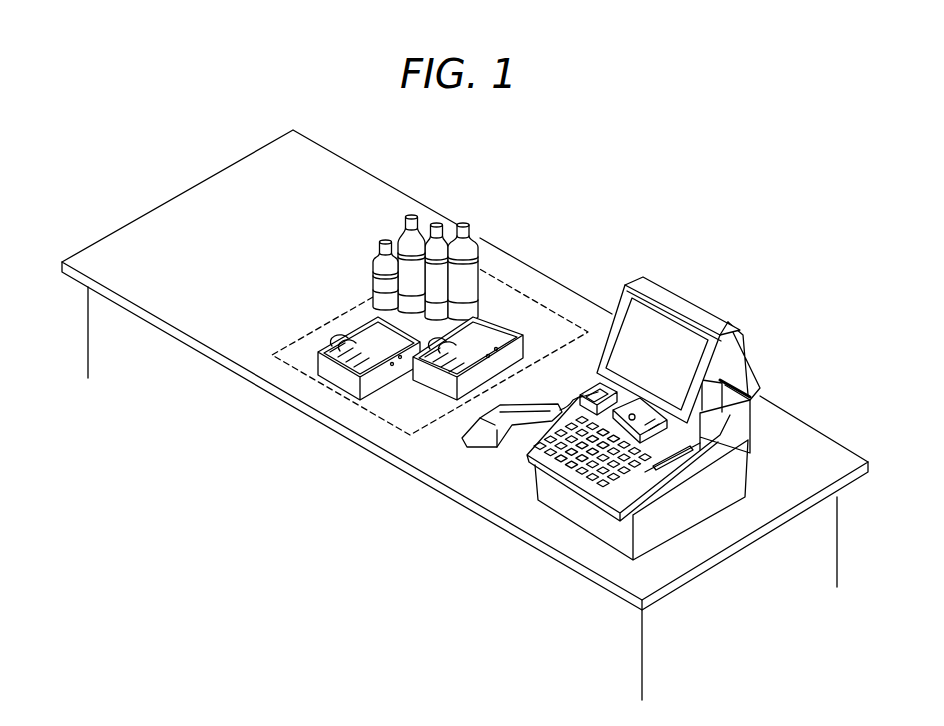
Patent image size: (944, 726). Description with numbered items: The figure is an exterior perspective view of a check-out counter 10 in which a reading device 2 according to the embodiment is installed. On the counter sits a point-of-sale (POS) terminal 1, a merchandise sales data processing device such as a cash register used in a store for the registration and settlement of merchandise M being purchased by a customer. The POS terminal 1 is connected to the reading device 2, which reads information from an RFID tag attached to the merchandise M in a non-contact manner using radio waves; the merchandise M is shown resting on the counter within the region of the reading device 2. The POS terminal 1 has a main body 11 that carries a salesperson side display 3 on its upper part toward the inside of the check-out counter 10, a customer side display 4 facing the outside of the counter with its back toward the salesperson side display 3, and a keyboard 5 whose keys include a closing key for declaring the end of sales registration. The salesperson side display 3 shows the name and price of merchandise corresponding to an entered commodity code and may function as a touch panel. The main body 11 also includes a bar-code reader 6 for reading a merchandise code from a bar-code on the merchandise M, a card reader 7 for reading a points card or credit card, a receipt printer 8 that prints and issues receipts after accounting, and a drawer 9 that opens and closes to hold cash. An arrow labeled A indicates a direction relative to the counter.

The POS terminal 1 is at (642, 429).
The reading device 2 is at (398, 412).
The salesperson side display 3 is at (630, 327).
The customer side display 4 is at (700, 305).
The keyboard 5 is at (607, 478).
The bar-code reader 6 is at (472, 443).
The card reader 7 is at (680, 458).
The receipt printer 8 is at (570, 380).
The drawer 9 is at (555, 502).
The check-out counter 10 is at (548, 533).
The main body 11 is at (742, 417).
The merchandise M is at (468, 225).
The direction A is at (276, 528).